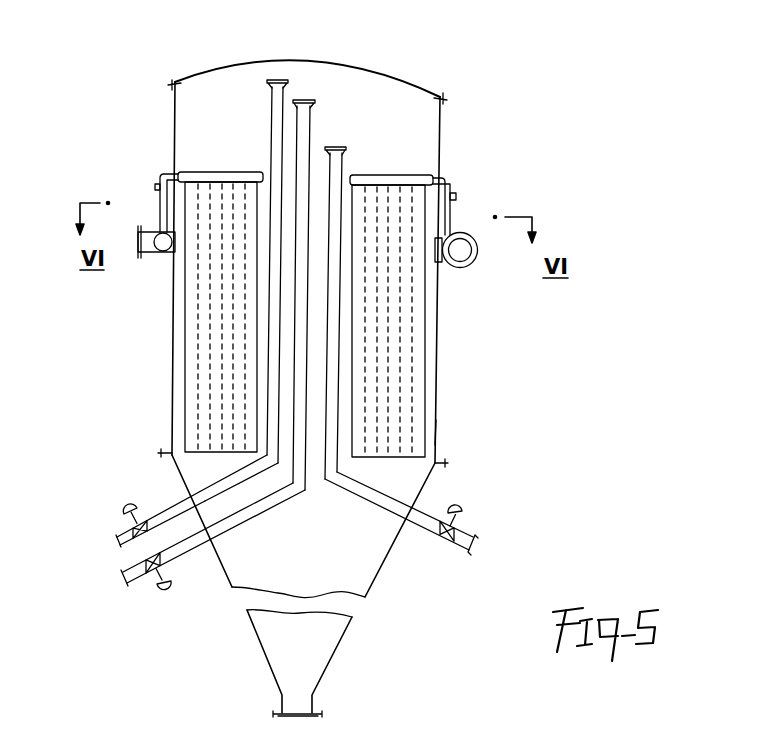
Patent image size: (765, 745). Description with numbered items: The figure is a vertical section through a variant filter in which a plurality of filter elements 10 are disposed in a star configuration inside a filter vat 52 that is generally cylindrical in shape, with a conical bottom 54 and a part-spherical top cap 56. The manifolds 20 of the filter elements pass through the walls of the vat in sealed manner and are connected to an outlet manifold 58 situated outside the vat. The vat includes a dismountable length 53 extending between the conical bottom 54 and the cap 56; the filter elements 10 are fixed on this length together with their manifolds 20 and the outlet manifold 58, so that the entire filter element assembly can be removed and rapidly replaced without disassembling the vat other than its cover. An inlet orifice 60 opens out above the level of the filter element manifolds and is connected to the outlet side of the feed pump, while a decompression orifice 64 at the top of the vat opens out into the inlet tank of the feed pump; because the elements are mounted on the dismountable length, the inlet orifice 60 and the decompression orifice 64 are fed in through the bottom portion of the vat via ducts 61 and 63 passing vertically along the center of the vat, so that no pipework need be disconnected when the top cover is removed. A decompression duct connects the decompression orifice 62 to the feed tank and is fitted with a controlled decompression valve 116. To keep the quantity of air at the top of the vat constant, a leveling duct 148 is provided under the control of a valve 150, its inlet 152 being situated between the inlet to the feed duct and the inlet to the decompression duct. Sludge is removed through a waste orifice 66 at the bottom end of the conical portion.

The filter element 10 is at (197, 374).
The manifold 20 is at (227, 172).
The filter vat 52 is at (437, 432).
The dismountable length of vat 53 is at (436, 340).
The conical bottom 54 is at (376, 577).
The part-spherical top cap 56 is at (382, 66).
The outlet manifold 58 is at (161, 250).
The inlet orifice 60 is at (338, 148).
The duct 61 is at (370, 503).
The decompression orifice 62 is at (192, 501).
The duct 63 is at (230, 480).
The decompression orifice 64 is at (278, 80).
The waste orifice 66 is at (305, 717).
The controlled decompression valve 116 is at (120, 530).
The leveling duct 148 is at (233, 518).
The valve 150 is at (150, 580).
The inlet of leveling duct 152 is at (306, 100).